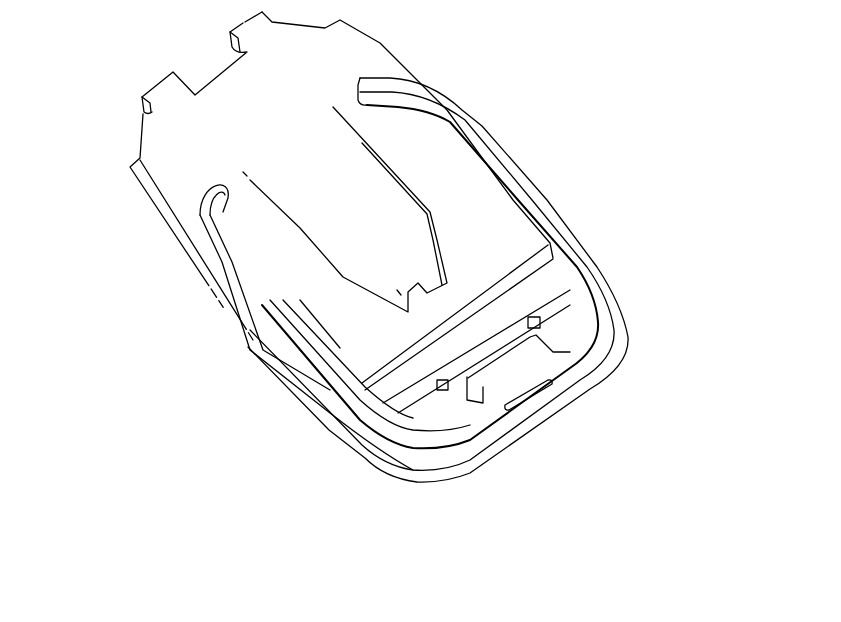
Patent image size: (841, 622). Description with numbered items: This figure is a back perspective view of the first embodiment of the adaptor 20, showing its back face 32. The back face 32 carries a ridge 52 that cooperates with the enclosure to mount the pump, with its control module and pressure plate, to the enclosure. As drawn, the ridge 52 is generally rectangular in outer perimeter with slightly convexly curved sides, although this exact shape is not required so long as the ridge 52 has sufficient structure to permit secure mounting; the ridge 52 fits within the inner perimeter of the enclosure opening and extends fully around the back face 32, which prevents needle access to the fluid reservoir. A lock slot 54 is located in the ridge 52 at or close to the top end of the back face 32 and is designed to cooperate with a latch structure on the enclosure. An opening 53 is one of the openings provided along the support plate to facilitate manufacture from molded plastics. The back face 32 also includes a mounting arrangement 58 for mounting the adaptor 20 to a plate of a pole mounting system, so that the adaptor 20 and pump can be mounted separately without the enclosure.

The adaptor 20 is at (528, 97).
The back face 32 is at (190, 137).
The ridge 52 is at (313, 370).
The opening 53 is at (535, 288).
The lock slot 54 is at (523, 400).
The mounting arrangement 58 is at (305, 227).